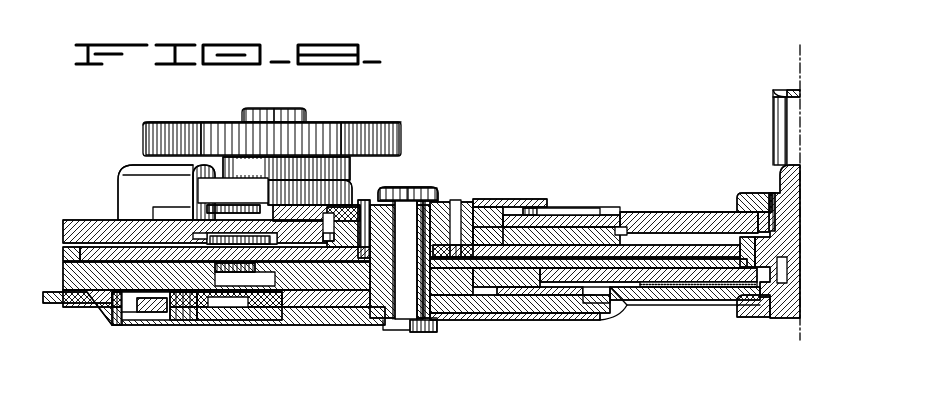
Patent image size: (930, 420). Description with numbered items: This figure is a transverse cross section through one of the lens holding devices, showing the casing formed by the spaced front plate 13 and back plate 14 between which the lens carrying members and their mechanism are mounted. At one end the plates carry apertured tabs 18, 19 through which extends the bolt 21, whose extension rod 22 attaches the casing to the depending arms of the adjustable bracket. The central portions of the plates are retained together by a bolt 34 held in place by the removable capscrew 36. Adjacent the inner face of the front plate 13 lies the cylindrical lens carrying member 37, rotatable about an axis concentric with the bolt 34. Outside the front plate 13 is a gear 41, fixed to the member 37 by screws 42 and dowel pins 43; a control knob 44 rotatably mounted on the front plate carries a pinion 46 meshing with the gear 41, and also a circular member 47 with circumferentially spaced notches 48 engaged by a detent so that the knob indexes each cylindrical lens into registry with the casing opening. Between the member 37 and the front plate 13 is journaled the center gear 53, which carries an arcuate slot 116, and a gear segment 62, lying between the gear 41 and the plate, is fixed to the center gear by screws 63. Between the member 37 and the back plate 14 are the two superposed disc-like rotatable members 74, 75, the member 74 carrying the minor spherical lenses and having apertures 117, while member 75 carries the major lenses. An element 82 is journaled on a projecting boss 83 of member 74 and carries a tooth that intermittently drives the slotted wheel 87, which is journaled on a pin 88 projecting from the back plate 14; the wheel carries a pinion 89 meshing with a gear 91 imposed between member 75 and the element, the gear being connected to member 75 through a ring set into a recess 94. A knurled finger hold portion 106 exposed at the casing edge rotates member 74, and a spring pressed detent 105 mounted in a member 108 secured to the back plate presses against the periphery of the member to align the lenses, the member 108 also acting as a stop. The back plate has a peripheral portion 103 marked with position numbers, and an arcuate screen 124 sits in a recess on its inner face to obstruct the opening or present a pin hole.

The front plate 13 is at (648, 214).
The back plate 14 is at (605, 288).
The aperture tab 18 is at (742, 207).
The aperture tab 19 is at (747, 305).
The bolt 21 is at (792, 318).
The extension rod 22 is at (773, 137).
The bolt 34 is at (460, 290).
The capscrew 36 is at (415, 198).
The lens carrying member 37 is at (680, 244).
The gear 41 is at (510, 203).
The screw 42 is at (457, 207).
The dowel pin 43 is at (365, 205).
The control knob 44 is at (403, 130).
The pinion 46 is at (256, 206).
The circular member 47 is at (350, 183).
The notch 48 is at (266, 180).
The center gear 53 is at (620, 226).
The gear segment 62 is at (572, 207).
The screw 63 is at (332, 242).
The rotatable member 74 is at (660, 268).
The rotatable member 75 is at (684, 276).
The element 82 is at (540, 270).
The projecting boss 83 is at (470, 300).
The slotted wheel 87 is at (228, 300).
The pin 88 is at (190, 312).
The pinion 89 is at (178, 310).
The gear 91 is at (290, 300).
The recess 94 is at (548, 266).
The peripheral portion 103 is at (37, 320).
The spring pressed detent 105 is at (763, 305).
The knurled finger hold portion 106 is at (64, 253).
The member 108 is at (764, 230).
The arcuate slot 116 is at (222, 233).
The aperture 117 is at (245, 272).
The screen 124 is at (706, 290).